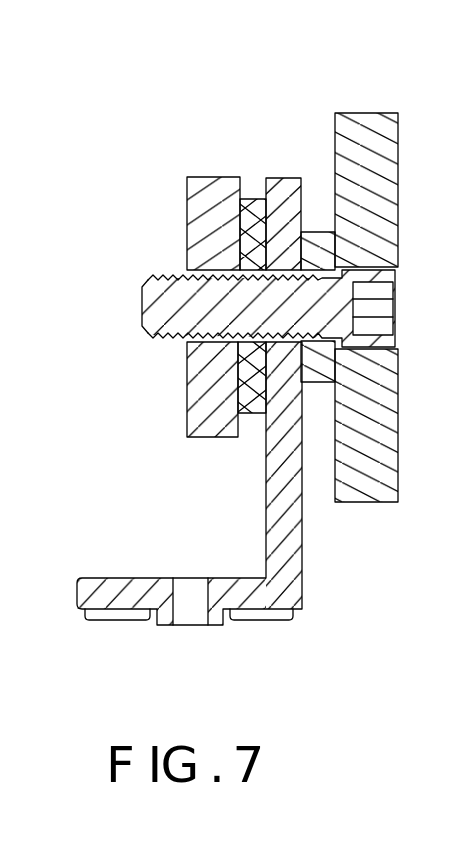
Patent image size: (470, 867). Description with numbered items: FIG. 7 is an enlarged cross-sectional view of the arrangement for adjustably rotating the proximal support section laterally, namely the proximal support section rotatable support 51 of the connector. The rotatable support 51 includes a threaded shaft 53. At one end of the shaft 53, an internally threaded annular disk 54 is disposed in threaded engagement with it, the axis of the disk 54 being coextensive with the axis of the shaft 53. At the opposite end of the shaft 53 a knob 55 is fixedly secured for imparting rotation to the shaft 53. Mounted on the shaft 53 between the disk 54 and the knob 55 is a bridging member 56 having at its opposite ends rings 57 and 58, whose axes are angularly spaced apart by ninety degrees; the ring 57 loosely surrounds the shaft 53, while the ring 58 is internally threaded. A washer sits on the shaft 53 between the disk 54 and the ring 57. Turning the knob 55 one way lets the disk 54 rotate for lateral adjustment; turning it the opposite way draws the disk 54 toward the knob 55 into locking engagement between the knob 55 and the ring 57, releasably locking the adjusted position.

The proximal support section rotatable support 51 is at (129, 624).
The threaded shaft 53 is at (146, 303).
The internally threaded annular disk 54 is at (192, 208).
The knob 55 is at (393, 155).
The bridging member 56 is at (190, 516).
The ring 57 is at (278, 179).
The ring 58 is at (133, 584).